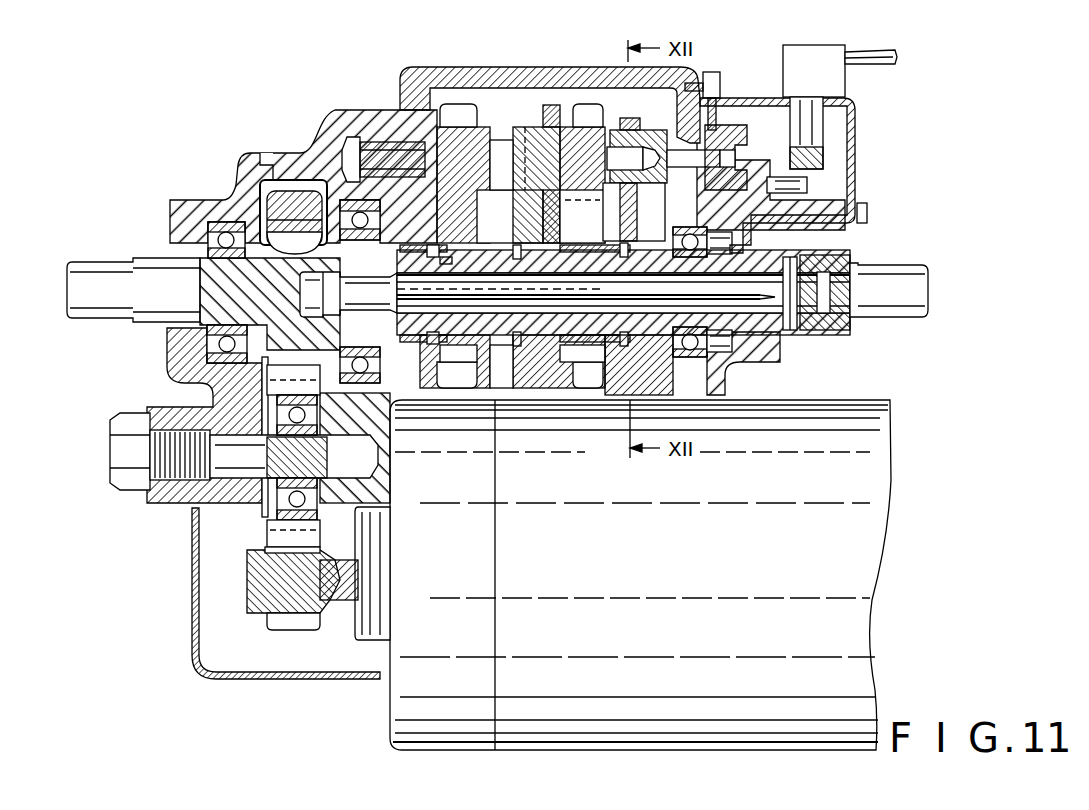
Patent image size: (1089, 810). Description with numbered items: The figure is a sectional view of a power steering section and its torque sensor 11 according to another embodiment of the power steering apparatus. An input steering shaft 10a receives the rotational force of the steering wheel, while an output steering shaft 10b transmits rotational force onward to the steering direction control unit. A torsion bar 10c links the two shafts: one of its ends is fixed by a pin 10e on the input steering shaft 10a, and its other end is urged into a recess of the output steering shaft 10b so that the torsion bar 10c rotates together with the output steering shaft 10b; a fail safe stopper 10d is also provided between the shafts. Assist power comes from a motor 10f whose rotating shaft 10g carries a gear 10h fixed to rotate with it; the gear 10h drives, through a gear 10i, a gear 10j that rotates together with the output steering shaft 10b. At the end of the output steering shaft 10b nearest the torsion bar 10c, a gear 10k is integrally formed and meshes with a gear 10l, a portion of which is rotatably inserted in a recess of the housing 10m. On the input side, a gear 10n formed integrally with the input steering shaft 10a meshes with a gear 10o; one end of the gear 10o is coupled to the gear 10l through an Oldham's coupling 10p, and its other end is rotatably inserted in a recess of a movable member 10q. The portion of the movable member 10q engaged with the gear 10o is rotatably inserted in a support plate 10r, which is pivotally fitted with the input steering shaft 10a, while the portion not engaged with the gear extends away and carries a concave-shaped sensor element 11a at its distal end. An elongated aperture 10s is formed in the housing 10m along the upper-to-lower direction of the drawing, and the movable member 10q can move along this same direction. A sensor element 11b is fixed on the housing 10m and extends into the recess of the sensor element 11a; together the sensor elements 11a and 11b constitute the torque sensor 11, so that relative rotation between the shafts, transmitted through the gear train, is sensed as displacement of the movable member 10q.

The input steering shaft 10a is at (890, 312).
The output steering shaft 10b is at (105, 302).
The torsion bar 10c is at (512, 300).
The fail safe stopper 10d is at (498, 337).
The pin 10e is at (790, 332).
The motor 10f is at (392, 712).
The rotating shaft 10g is at (258, 585).
The gear 10h is at (300, 625).
The gear 10i is at (265, 508).
The gear 10j is at (293, 200).
The gear 10k is at (445, 384).
The gear 10l is at (458, 110).
The housing 10m is at (348, 112).
The gear 10n is at (605, 384).
The gear 10o is at (592, 108).
The Oldham's coupling 10p is at (504, 140).
The movable member 10q is at (648, 140).
The support plate 10r is at (628, 212).
The elongated aperture 10s is at (714, 78).
The torque sensor 11 is at (768, 160).
The sensor element 11a is at (728, 135).
The sensor element 11b is at (780, 95).